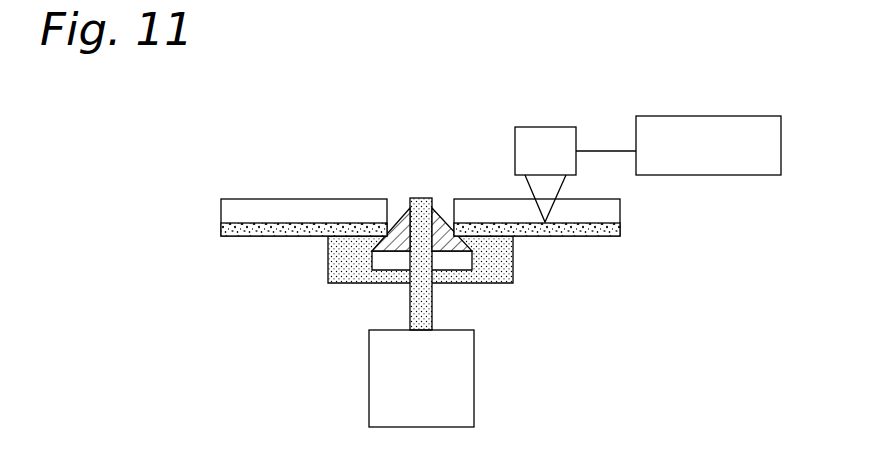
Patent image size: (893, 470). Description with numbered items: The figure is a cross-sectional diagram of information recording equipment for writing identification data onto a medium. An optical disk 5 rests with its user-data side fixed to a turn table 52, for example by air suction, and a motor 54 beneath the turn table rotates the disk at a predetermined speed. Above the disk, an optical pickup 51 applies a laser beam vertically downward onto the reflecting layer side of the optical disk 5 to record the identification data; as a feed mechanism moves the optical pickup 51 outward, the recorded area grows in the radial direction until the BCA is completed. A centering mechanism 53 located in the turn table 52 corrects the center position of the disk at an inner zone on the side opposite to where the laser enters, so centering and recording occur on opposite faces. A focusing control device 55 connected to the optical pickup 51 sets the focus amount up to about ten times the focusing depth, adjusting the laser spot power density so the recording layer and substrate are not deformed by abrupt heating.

The optical disk 5 is at (607, 213).
The optical pickup 51 is at (543, 138).
The turn table 52 is at (500, 270).
The centering mechanism 53 is at (404, 208).
The motor 54 is at (455, 388).
The focusing control device 55 is at (713, 127).